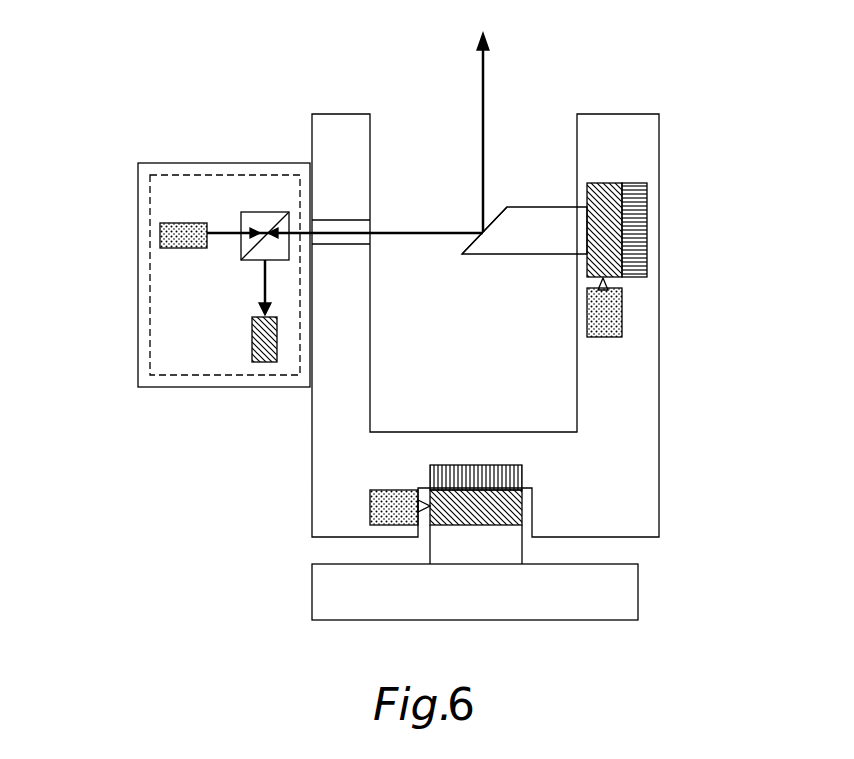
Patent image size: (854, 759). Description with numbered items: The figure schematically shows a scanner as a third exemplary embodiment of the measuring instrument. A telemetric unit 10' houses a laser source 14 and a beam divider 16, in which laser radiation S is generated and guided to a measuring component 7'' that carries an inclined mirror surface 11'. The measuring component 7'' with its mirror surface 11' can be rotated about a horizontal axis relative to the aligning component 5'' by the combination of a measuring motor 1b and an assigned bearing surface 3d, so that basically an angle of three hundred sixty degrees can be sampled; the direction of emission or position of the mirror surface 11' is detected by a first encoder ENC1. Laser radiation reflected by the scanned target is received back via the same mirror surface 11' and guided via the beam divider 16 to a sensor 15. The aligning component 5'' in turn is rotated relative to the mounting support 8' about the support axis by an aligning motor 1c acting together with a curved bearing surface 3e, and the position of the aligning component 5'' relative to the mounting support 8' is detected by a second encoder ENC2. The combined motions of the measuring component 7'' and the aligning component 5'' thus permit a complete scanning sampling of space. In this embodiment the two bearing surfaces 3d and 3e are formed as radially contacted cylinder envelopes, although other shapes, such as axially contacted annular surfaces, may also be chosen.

The aligning component 5'' is at (418, 325).
The mounting support 8' is at (419, 596).
The telemetric unit 10' is at (167, 275).
The laser source 14 is at (185, 228).
The beam divider 16 is at (257, 212).
The sensor 15 is at (257, 347).
The laser radiation S is at (458, 132).
The inclined mirror surface 11' is at (442, 215).
The measuring component 7'' is at (493, 268).
The bearing surface 3d is at (600, 188).
The first encoder ENC1 is at (628, 243).
The measuring motor 1b is at (608, 302).
The second encoder ENC2 is at (510, 468).
The bearing surface 3e is at (493, 503).
The aligning motor 1c is at (395, 508).